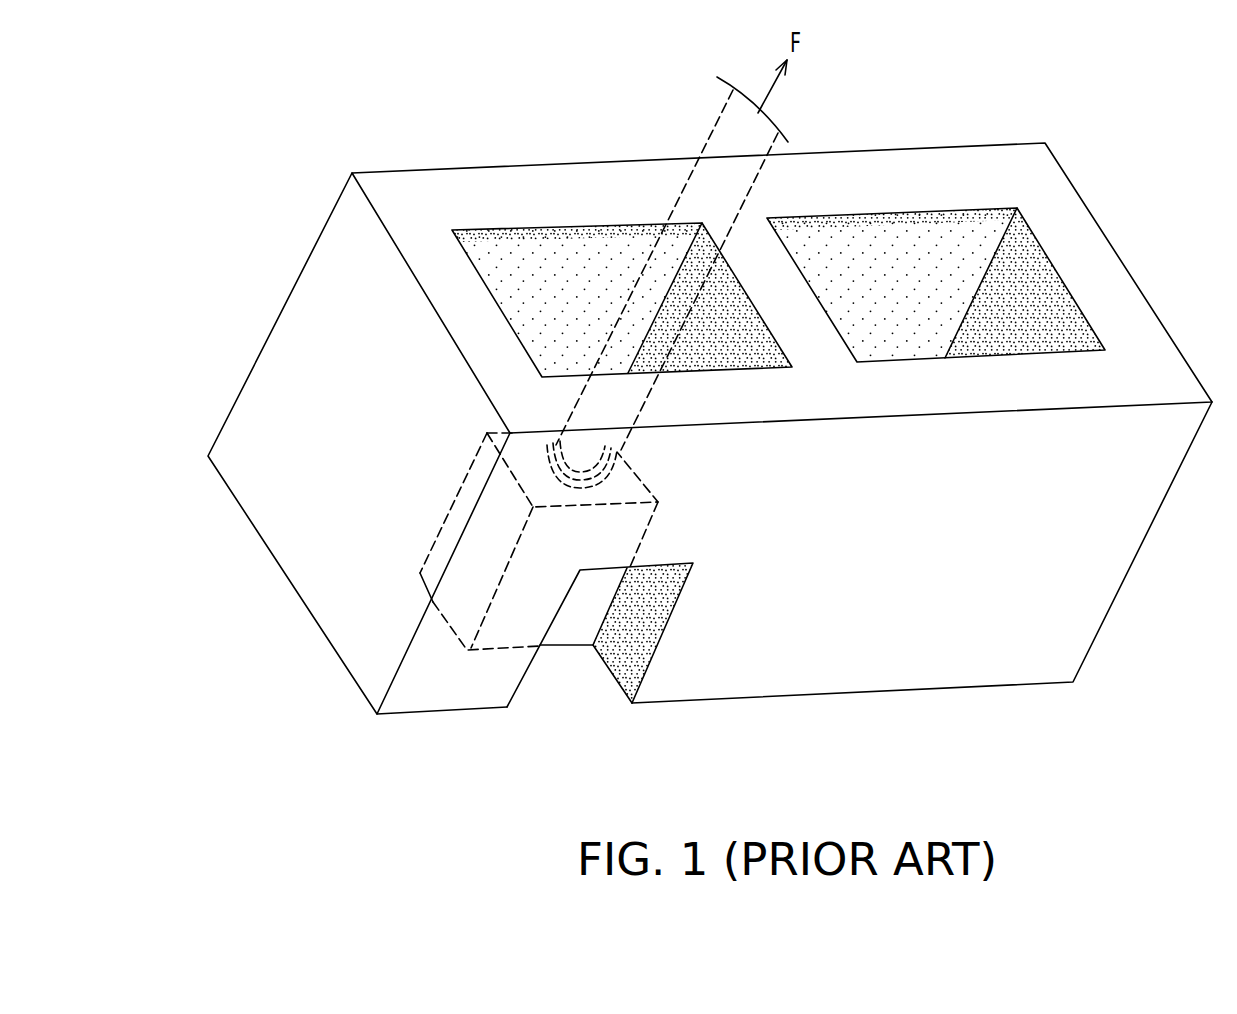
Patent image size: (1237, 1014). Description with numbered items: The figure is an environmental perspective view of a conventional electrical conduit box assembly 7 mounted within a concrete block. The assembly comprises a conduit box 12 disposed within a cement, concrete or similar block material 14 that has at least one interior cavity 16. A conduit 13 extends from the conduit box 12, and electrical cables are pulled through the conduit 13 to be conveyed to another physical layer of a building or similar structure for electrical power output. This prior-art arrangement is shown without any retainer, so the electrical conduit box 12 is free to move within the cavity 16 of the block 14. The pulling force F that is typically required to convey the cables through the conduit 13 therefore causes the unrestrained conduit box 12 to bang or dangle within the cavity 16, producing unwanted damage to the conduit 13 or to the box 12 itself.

The electrical conduit box assembly 7 is at (392, 116).
The conduit box 12 is at (563, 632).
The conduit 13 is at (713, 128).
The block 14 is at (1073, 650).
The interior cavity 16 is at (530, 275).